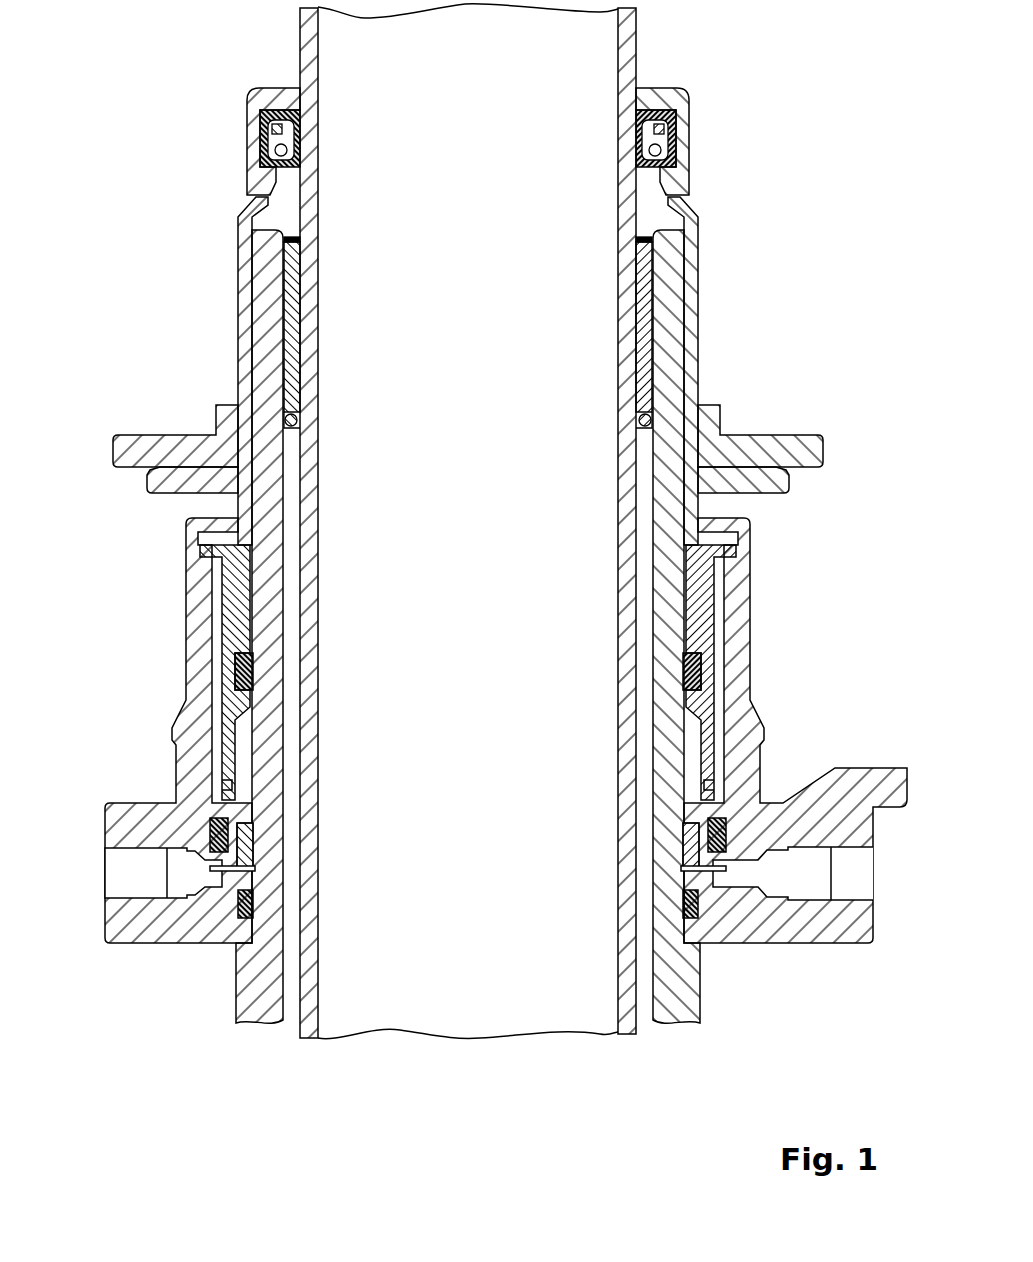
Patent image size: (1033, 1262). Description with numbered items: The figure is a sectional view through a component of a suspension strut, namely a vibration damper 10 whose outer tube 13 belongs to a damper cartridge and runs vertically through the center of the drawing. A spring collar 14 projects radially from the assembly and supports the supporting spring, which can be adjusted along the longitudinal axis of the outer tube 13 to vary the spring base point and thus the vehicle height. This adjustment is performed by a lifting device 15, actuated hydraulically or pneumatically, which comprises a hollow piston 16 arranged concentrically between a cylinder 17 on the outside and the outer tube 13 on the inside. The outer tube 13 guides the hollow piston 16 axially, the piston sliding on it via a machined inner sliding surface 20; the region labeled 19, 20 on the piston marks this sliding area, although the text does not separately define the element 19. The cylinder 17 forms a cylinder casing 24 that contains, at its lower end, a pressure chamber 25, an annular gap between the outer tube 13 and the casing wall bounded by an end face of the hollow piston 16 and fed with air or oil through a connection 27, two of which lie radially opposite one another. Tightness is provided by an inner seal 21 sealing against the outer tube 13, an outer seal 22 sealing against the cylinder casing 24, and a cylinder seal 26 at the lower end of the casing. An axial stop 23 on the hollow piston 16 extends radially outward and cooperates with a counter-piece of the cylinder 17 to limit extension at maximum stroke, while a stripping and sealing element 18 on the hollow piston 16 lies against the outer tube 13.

The vibration damper 10 is at (624, 45).
The outer tube 13 is at (677, 290).
The spring collar 14 is at (815, 450).
The lifting device 15 is at (491, 730).
The hollow piston 16 is at (691, 252).
The cylinder 17 is at (746, 647).
The stripping and sealing element 18 is at (658, 140).
The ring 19 is at (257, 642).
The sliding surface 20 is at (711, 672).
The inner seal 21 is at (255, 672).
The outer seal 22 is at (213, 832).
The axial stop 23 is at (212, 802).
The cylinder casing 24 is at (170, 663).
The pressure chamber 25 is at (250, 868).
The cylinder seal 26 is at (247, 905).
The connection 27 is at (120, 878).